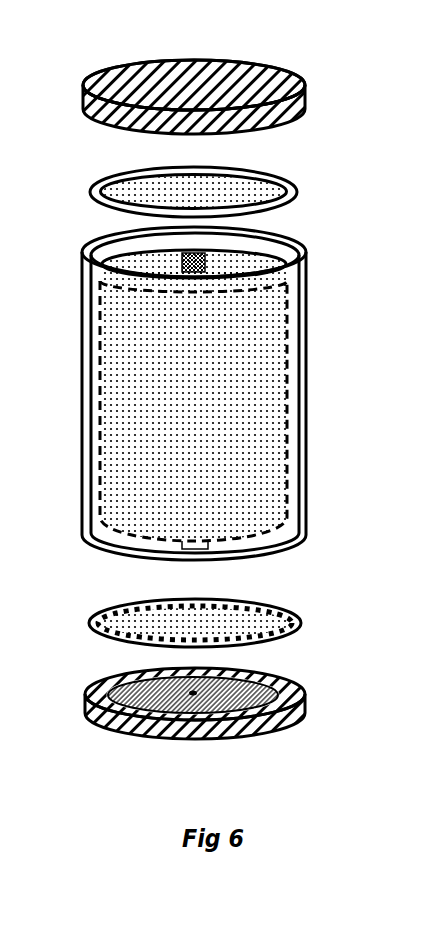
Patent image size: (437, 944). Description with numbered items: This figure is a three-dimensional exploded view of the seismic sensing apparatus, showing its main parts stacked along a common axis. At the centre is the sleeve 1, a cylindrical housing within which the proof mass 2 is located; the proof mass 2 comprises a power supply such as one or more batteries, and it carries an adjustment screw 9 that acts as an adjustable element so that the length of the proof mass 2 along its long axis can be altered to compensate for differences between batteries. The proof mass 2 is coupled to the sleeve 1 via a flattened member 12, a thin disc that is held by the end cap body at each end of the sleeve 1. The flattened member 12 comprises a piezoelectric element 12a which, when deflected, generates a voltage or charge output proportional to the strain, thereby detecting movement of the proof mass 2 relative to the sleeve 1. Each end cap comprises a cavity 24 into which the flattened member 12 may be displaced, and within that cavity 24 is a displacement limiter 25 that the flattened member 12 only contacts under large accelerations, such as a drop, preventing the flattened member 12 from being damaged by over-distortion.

The sleeve 1 is at (234, 383).
The proof mass 2 is at (247, 438).
The adjustment screw 9 is at (213, 252).
The flattened member 12 is at (245, 169).
The piezoelectric element 12a is at (257, 197).
The cavity 24 is at (201, 690).
The displacement limiter 25 is at (222, 684).